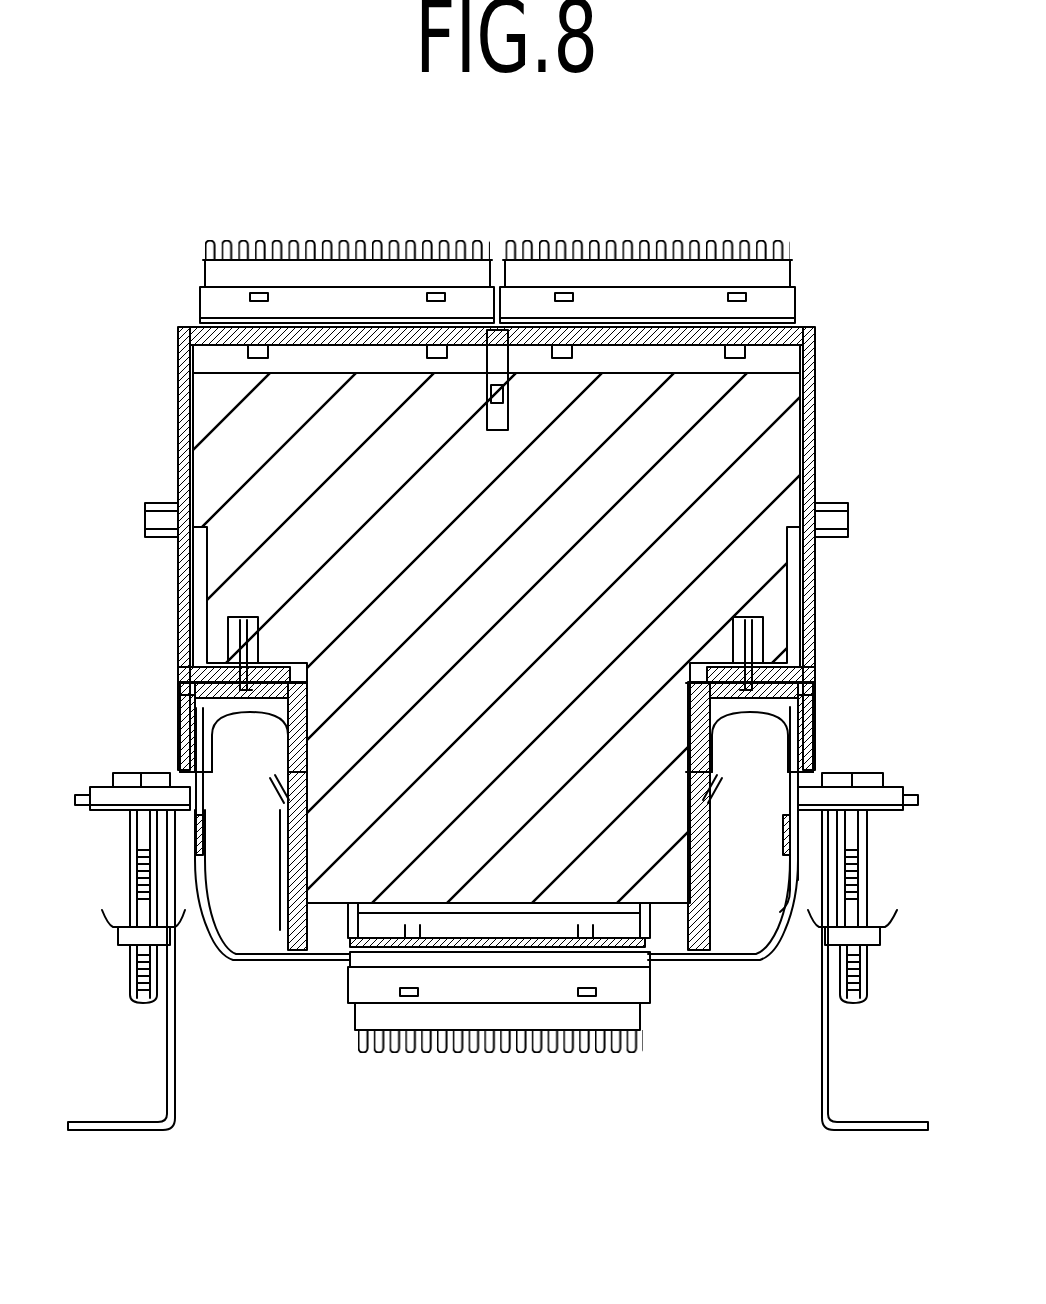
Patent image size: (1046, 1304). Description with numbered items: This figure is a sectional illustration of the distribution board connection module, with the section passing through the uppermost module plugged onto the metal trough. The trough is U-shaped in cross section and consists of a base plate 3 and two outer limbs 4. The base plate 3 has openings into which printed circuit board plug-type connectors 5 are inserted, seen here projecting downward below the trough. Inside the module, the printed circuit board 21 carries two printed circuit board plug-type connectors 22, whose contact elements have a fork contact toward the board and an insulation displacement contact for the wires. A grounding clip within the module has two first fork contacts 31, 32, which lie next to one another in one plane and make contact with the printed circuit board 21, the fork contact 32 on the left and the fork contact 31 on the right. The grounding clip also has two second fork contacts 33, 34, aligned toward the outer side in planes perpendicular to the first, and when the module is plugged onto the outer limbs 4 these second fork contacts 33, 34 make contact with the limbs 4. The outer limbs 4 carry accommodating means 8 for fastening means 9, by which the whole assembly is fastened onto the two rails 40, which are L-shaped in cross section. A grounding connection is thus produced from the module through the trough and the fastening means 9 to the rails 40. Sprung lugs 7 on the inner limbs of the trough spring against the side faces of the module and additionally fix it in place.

The base plate 3 is at (672, 962).
The limbs 4 is at (800, 895).
The printed circuit board plug-type connectors 5 is at (513, 1015).
The sprung lugs 7 is at (722, 782).
The accommodating means 8 is at (103, 787).
The fastening means 9 is at (130, 972).
The printed circuit board 21 is at (233, 452).
The printed circuit board plug-type connectors 22 is at (562, 278).
The first fork contact 31 is at (755, 650).
The first fork contact 32 is at (237, 650).
The second fork contact 33 is at (197, 728).
The second fork contact 34 is at (793, 735).
The rails 40 is at (130, 1125).